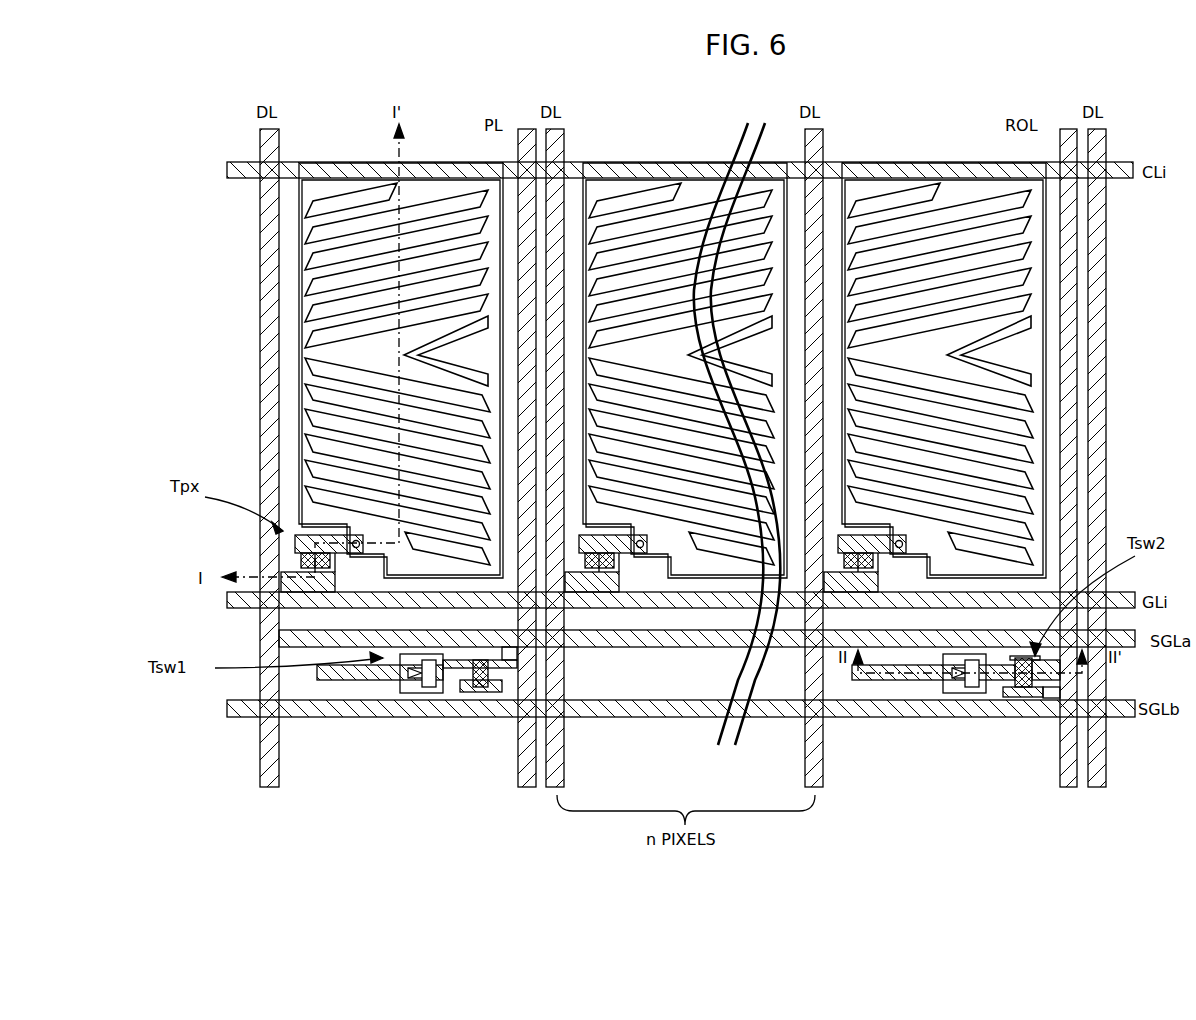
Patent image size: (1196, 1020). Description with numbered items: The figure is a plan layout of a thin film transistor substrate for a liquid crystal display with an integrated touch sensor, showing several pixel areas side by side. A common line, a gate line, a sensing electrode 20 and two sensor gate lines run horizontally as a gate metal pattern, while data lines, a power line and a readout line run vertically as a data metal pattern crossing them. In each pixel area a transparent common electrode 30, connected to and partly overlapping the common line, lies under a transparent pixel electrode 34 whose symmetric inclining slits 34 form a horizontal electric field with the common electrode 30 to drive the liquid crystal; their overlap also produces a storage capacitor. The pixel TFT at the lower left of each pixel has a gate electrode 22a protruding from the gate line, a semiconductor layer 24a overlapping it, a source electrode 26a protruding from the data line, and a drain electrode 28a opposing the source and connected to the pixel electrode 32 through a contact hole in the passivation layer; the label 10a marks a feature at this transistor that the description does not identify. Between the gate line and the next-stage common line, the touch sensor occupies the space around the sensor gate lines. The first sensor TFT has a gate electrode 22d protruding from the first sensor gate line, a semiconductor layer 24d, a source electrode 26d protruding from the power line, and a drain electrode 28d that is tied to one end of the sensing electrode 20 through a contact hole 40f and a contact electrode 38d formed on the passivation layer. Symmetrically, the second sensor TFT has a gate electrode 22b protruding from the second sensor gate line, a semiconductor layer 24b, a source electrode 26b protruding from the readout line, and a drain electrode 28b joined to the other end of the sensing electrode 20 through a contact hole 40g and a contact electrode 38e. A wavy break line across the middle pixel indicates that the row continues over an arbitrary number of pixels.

The contact hole 10a is at (355, 540).
The sensing electrode 20 is at (650, 672).
The gate electrode 22a is at (298, 552).
The semiconductor layer 24a is at (335, 558).
The source electrode 26a is at (300, 562).
The drain electrode 28a is at (318, 527).
The transparent common electrode 30 is at (302, 330).
The pixel electrode 32 is at (303, 351).
The transparent pixel electrode 34 is at (327, 283).
The gate electrode 22d is at (466, 692).
The semiconductor layer 24d is at (428, 695).
The source electrode 26d is at (481, 688).
The drain electrode 28d is at (452, 660).
The contact electrode 38d is at (402, 660).
The contact hole 40f is at (425, 664).
The gate electrode 22b is at (1008, 697).
The semiconductor layer 24b is at (985, 693).
The source electrode 26b is at (1024, 688).
The drain electrode 28b is at (1012, 657).
The contact electrode 38e is at (944, 666).
The contact hole 40g is at (966, 666).